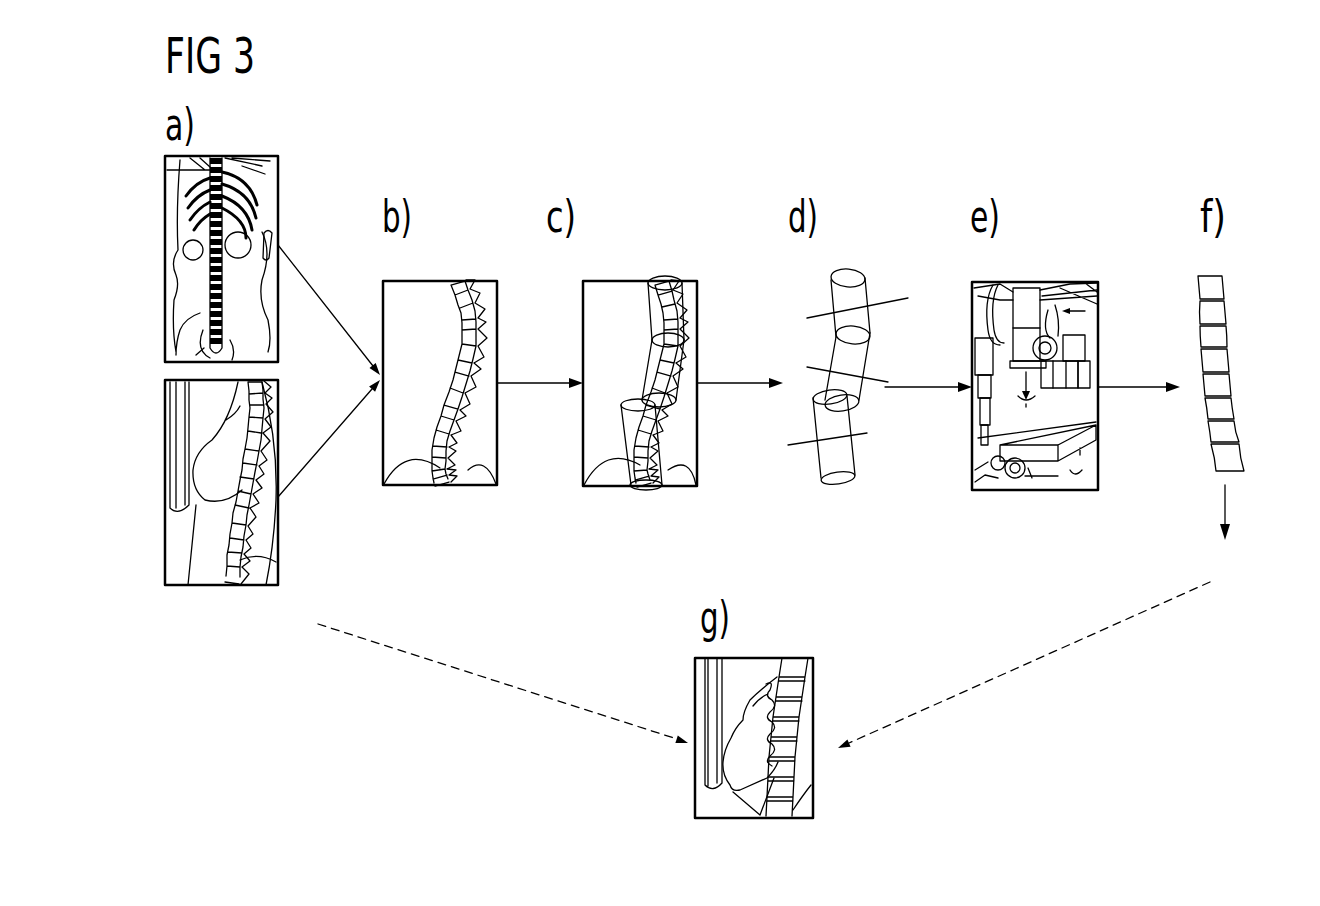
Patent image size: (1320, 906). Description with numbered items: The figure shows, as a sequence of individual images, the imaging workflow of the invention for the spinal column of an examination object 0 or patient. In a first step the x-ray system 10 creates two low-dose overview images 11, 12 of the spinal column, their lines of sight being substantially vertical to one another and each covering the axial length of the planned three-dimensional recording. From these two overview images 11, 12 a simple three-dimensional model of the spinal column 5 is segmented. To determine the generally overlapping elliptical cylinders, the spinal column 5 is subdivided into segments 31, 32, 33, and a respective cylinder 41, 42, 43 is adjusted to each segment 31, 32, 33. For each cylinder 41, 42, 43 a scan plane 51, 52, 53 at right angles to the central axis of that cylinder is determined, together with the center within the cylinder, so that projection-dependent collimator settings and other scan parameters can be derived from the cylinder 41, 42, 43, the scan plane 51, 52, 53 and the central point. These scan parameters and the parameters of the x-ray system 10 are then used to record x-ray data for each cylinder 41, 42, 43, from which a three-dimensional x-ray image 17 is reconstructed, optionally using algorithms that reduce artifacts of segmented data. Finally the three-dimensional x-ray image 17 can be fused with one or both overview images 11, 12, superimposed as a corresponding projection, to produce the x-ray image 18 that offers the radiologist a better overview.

In FIG. 3A, the examination object 0 is at (252, 305).
In FIG. 3A, the first overview image 11 is at (278, 170).
In FIG. 3A, the second overview image 12 is at (278, 384).
In FIG. 3B, the spinal column 5 is at (459, 281).
In FIG. 3C, the first segment 31 is at (648, 306).
In FIG. 3C, the second segment 32 is at (645, 362).
In FIG. 3C, the third segment 33 is at (636, 432).
In FIG. 3C, the first cylinder 41 is at (667, 276).
In FIG. 3D, the first cylinder 41 is at (869, 290).
In FIG. 3C, the second cylinder 42 is at (686, 398).
In FIG. 3D, the second cylinder 42 is at (870, 355).
In FIG. 3C, the third cylinder 43 is at (668, 458).
In FIG. 3D, the third cylinder 43 is at (856, 455).
In FIG. 3D, the first scan plane 51 is at (812, 314).
In FIG. 3D, the second scan plane 52 is at (808, 367).
In FIG. 3D, the third scan plane 53 is at (792, 450).
In FIG. 3E, the x-ray system 10 is at (1100, 318).
In FIG. 3F, the three-dimensional x-ray image 17 is at (1224, 288).
In FIG. 3G, the fused x-ray image 18 is at (813, 672).